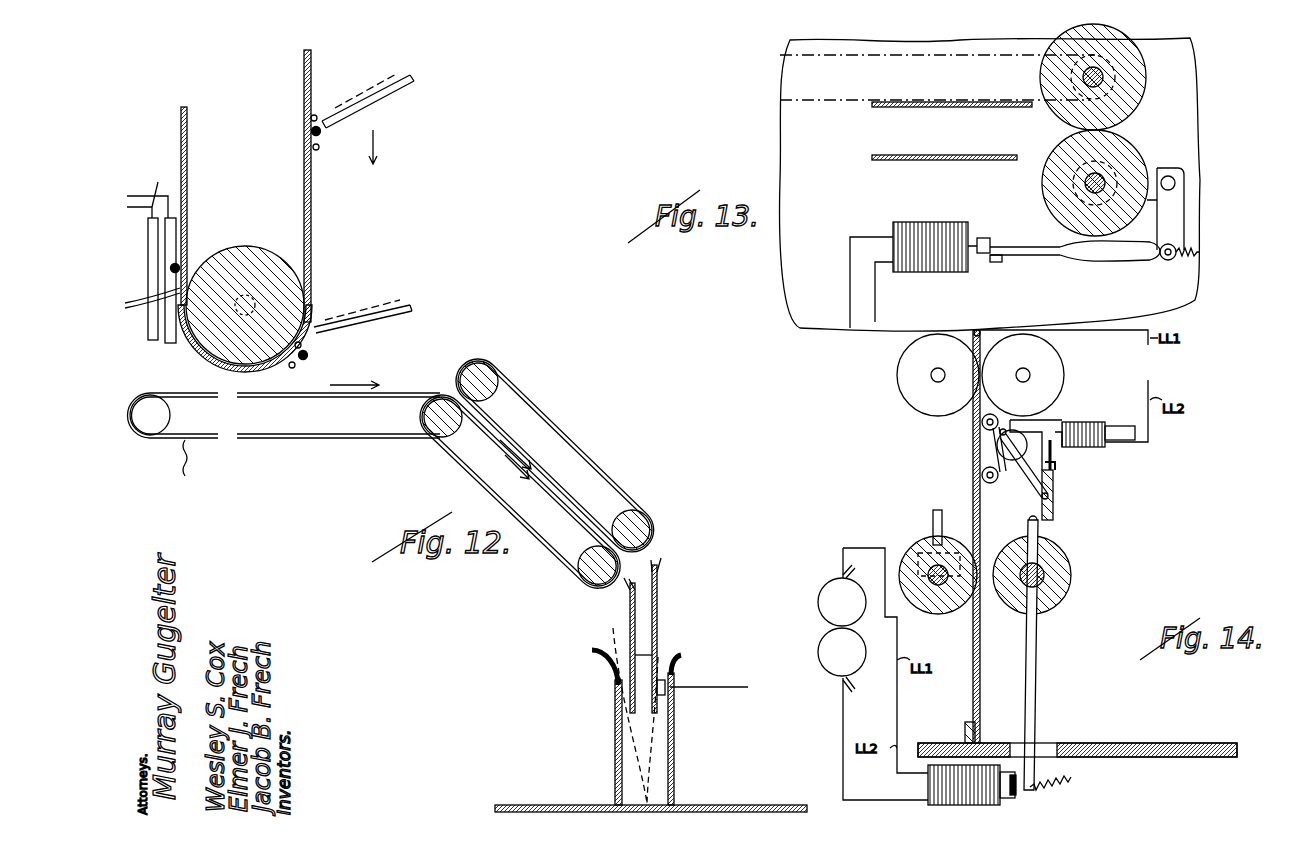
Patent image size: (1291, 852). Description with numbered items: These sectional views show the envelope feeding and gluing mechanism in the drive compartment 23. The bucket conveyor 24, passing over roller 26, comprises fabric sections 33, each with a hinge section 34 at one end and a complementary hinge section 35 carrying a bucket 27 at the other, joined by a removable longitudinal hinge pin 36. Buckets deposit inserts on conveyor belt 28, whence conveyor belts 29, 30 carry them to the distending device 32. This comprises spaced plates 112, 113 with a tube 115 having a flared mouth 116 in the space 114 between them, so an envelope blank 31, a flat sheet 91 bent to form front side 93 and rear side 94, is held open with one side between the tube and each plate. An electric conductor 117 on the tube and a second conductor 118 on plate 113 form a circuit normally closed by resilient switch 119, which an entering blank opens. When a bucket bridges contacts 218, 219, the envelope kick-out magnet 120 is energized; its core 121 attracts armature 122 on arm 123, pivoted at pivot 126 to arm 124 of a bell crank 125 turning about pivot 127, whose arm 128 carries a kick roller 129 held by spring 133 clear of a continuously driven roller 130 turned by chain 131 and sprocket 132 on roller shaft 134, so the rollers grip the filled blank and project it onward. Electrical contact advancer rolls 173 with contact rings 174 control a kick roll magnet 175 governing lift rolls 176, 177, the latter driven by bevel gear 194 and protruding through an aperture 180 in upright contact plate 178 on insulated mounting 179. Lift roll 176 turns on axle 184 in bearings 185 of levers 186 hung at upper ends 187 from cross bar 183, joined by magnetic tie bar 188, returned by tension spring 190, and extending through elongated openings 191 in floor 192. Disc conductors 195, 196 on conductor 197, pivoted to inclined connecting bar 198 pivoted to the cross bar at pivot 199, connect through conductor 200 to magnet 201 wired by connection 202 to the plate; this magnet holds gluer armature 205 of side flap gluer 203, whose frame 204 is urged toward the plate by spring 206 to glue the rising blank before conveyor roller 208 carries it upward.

In FIG. 12, the drive compartment 23 is at (742, 805).
In FIG. 12, the bucket conveyor 24 is at (311, 232).
In FIG. 12, the roller 26 is at (282, 292).
In FIG. 12, the bucket 27 is at (405, 85).
In FIG. 12, the conveyor belt 28 is at (362, 400).
In FIG. 12, the conveyor belt 29 is at (558, 493).
In FIG. 12, the conveyor belt 30 is at (556, 483).
In FIG. 14, the envelope blank 31 is at (973, 650).
In FIG. 12, the distending device 32 is at (612, 675).
In FIG. 12, the section 33 is at (187, 188).
In FIG. 12, the hinge section 34 is at (320, 150).
In FIG. 12, the complementary hinge section 35 is at (320, 121).
In FIG. 12, the longitudinal hinge pin 36 is at (321, 132).
In FIG. 12, the flat sheet 91 is at (620, 735).
In FIG. 12, the front side 93 is at (618, 700).
In FIG. 12, the rear side 94 is at (660, 725).
In FIG. 12, the plate 112 is at (615, 770).
In FIG. 13, the plate 112 is at (962, 101).
In FIG. 12, the plate 113 is at (675, 755).
In FIG. 13, the plate 113 is at (960, 161).
In FIG. 12, the space 114 is at (663, 740).
In FIG. 12, the tube 115 is at (658, 622).
In FIG. 12, the flared mouth 116 is at (650, 572).
In FIG. 12, the electric conductor 117 is at (658, 640).
In FIG. 12, the second conductor 118 is at (748, 690).
In FIG. 12, the switch 119 is at (665, 660).
In FIG. 13, the envelope kick-out magnet 120 is at (944, 265).
In FIG. 13, the core 121 is at (975, 258).
In FIG. 13, the armature 122 is at (994, 244).
In FIG. 13, the arm 123 is at (1106, 260).
In FIG. 13, the arm 124 is at (1178, 220).
In FIG. 13, the bell crank 125 is at (1172, 208).
In FIG. 13, the pivot 126 is at (1182, 262).
In FIG. 13, the pivot 127 is at (1172, 182).
In FIG. 13, the arm 128 is at (1150, 142).
In FIG. 13, the kick roller 129 is at (1115, 150).
In FIG. 13, the continuously driven roller 130 is at (1140, 90).
In FIG. 13, the chain 131 is at (1105, 62).
In FIG. 13, the sprocket 132 is at (1140, 58).
In FIG. 13, the spring 133 is at (1203, 250).
In FIG. 13, the roller shaft 134 is at (1130, 98).
In FIG. 14, the electrical contact advancer roll 173 is at (822, 640).
In FIG. 14, the contact ring 174 is at (818, 600).
In FIG. 14, the kick roll magnet 175 is at (957, 765).
In FIG. 14, the lift roll 176 is at (1062, 585).
In FIG. 14, the lift roll 177 is at (935, 612).
In FIG. 14, the upright contact plate 178 is at (973, 492).
In FIG. 14, the insulated mounting 179 is at (968, 722).
In FIG. 14, the aperture 180 is at (960, 612).
In FIG. 14, the cross bar 183 is at (1055, 500).
In FIG. 14, the axle 184 is at (1045, 575).
In FIG. 14, the bearing 185 is at (1052, 566).
In FIG. 14, the lever 186 is at (1035, 665).
In FIG. 14, the upper end 187 is at (1030, 521).
In FIG. 14, the tie bar 188 is at (1022, 793).
In FIG. 14, the tension spring 190 is at (1060, 765).
In FIG. 14, the elongated opening 191 is at (1045, 743).
In FIG. 14, the floor 192 is at (1130, 743).
In FIG. 14, the bevel gear 194 is at (920, 548).
In FIG. 14, the electrical conductor 195 is at (982, 476).
In FIG. 14, the electrical conductor 196 is at (983, 425).
In FIG. 14, the conductor 197 is at (990, 445).
In FIG. 14, the inclined connecting bar 198 is at (1021, 465).
In FIG. 14, the pivot 199 is at (1030, 495).
In FIG. 14, the conductor 200 is at (1075, 422).
In FIG. 14, the magnet 201 is at (1082, 425).
In FIG. 14, the connection 202 is at (975, 333).
In FIG. 14, the side flap gluer 203 is at (1018, 432).
In FIG. 14, the frame 204 is at (1030, 440).
In FIG. 14, the gluer armature 205 is at (1052, 430).
In FIG. 14, the spring 206 is at (1055, 468).
In FIG. 14, the conveyor roller 208 is at (975, 380).
In FIG. 12, the contact 218 is at (152, 330).
In FIG. 13, the contact 218 is at (850, 270).
In FIG. 12, the contact 219 is at (170, 340).
In FIG. 13, the contact 219 is at (876, 312).